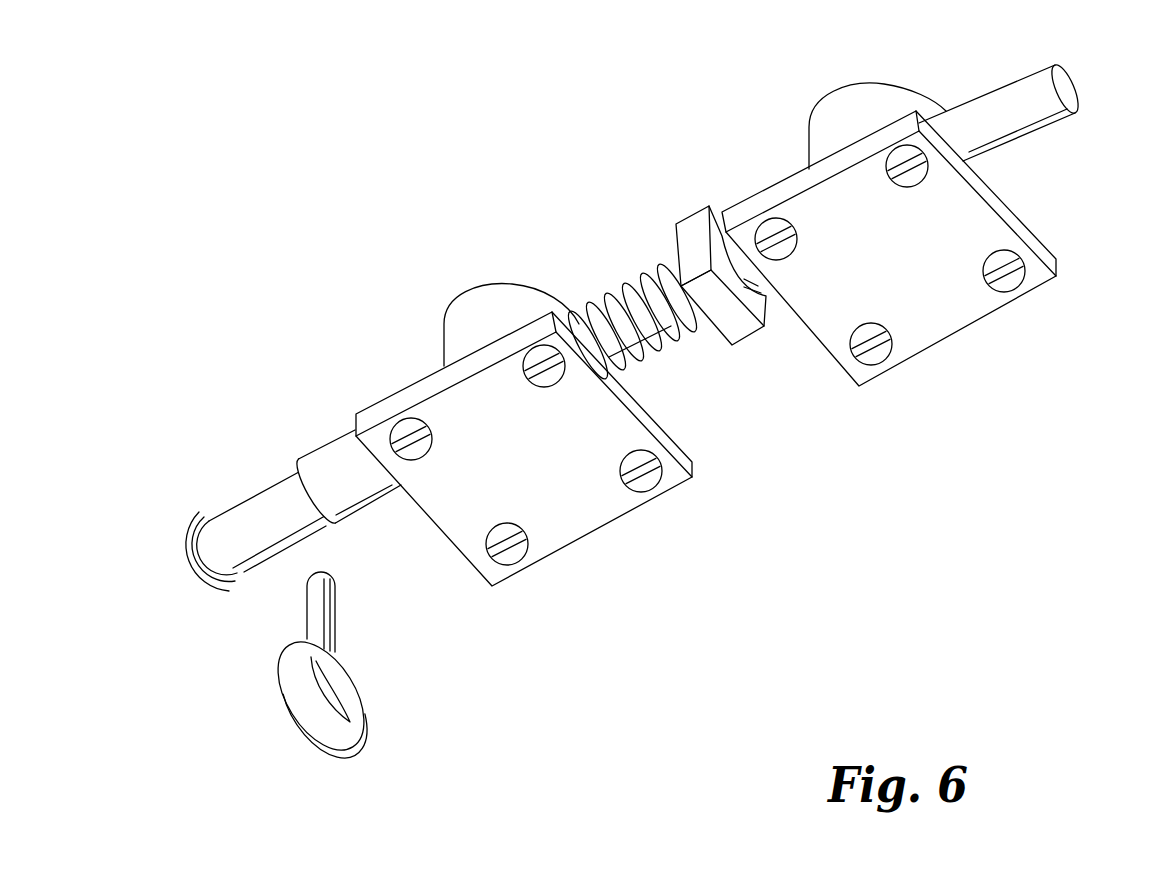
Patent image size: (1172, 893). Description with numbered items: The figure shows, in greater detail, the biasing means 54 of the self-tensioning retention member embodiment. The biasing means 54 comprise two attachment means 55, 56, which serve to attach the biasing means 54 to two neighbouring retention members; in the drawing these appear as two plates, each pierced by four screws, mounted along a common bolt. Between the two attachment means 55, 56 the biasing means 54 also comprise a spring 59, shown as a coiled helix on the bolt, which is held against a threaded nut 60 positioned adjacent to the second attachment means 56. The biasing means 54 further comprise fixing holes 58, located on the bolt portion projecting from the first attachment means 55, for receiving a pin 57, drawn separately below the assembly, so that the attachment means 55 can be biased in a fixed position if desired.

The biasing means 54 is at (380, 200).
The attachment means 55 is at (572, 528).
The attachment means 56 is at (950, 320).
The pin 57 is at (350, 728).
The fixing holes 58 is at (232, 528).
The spring 59 is at (615, 290).
The threaded nut 60 is at (694, 223).